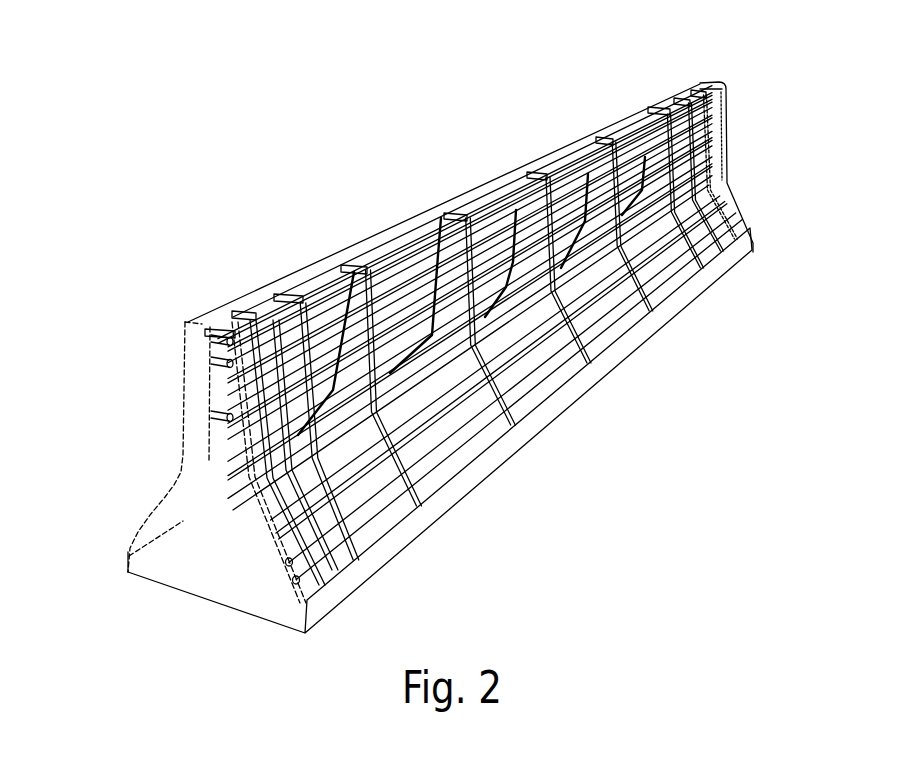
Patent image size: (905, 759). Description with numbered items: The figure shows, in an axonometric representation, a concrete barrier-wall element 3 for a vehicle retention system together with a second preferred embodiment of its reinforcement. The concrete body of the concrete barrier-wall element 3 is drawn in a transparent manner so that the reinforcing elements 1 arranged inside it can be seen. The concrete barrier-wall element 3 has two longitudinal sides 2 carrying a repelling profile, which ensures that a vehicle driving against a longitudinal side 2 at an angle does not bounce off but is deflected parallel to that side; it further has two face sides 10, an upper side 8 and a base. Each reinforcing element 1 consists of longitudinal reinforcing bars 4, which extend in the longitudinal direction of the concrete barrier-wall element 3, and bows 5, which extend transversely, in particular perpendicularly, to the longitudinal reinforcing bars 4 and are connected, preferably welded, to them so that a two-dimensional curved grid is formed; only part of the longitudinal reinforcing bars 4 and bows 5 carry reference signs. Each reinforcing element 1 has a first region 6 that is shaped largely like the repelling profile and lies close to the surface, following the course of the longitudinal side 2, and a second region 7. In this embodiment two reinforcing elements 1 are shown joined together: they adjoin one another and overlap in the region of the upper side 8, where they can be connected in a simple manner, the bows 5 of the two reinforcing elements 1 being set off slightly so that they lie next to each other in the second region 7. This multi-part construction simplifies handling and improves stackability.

The reinforcing element 1 is at (200, 320).
The longitudinal side 2 is at (523, 345).
The concrete barrier-wall element 3 is at (726, 90).
The longitudinal reinforcing bars 4 is at (233, 417).
The bows 5 is at (233, 506).
The first region 6 is at (168, 468).
The second region 7 is at (528, 170).
The upper side 8 is at (664, 108).
The face sides 10 is at (250, 604).